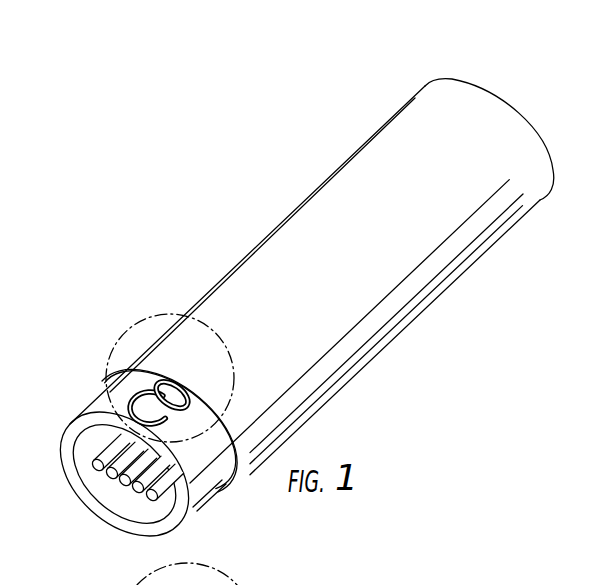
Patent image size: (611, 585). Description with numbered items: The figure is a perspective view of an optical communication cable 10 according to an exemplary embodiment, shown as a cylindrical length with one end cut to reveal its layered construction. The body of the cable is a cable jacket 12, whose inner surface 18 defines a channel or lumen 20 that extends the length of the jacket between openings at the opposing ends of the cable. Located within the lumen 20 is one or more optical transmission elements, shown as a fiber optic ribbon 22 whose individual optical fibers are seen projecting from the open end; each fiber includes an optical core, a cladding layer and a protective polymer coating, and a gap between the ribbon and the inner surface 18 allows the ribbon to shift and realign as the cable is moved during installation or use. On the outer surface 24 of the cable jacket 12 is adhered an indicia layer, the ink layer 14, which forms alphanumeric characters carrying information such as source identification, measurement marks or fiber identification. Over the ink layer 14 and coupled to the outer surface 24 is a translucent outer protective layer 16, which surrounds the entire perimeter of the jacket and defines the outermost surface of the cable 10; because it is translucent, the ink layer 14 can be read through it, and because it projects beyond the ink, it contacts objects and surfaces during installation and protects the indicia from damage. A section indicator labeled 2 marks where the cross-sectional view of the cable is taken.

The section indicator / detail loops 2 is at (212, 420).
The cable 10 is at (294, 325).
The cable jacket 12 is at (124, 463).
The ink layer 14 is at (180, 417).
The outer protective layer 16 is at (292, 400).
The inner surface 18 is at (160, 511).
The lumen 20 is at (127, 504).
The fiber optic ribbon 22 is at (109, 477).
The outer surface 24 is at (197, 507).